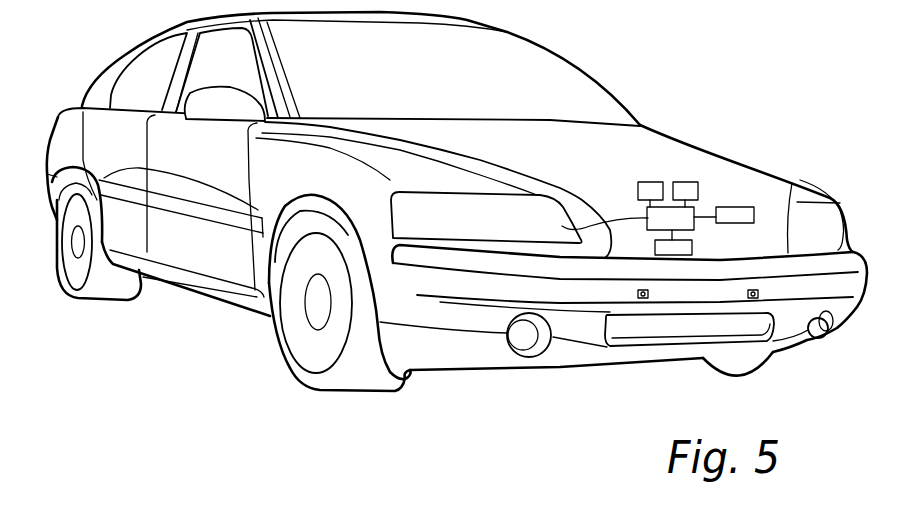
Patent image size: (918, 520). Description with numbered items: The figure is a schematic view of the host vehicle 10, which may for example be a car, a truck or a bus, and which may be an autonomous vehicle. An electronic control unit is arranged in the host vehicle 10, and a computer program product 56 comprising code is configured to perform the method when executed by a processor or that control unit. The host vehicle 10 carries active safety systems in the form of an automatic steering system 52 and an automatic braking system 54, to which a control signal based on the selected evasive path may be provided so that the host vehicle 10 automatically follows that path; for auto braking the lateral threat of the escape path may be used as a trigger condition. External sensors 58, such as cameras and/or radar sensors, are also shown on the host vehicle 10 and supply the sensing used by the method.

The host vehicle 10 is at (663, 93).
The automatic steering system 52 is at (638, 190).
The automatic braking system 54 is at (683, 186).
The computer program product 56 is at (742, 213).
The external sensors 58 is at (692, 246).